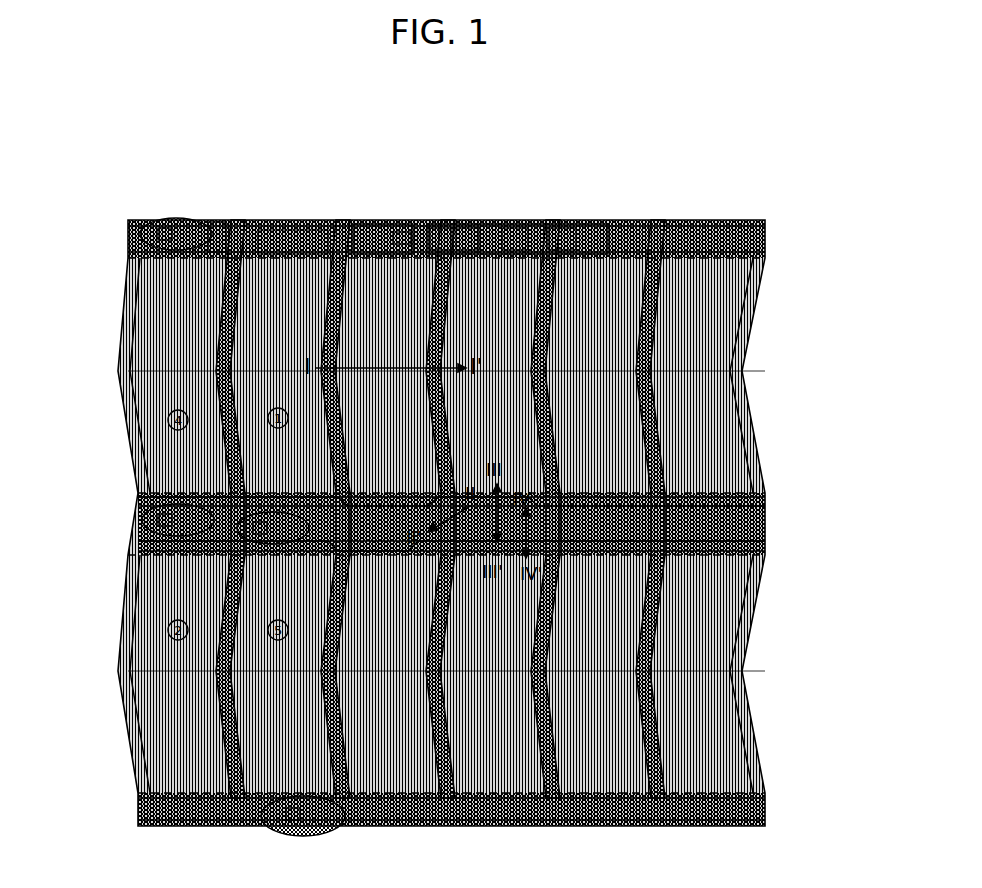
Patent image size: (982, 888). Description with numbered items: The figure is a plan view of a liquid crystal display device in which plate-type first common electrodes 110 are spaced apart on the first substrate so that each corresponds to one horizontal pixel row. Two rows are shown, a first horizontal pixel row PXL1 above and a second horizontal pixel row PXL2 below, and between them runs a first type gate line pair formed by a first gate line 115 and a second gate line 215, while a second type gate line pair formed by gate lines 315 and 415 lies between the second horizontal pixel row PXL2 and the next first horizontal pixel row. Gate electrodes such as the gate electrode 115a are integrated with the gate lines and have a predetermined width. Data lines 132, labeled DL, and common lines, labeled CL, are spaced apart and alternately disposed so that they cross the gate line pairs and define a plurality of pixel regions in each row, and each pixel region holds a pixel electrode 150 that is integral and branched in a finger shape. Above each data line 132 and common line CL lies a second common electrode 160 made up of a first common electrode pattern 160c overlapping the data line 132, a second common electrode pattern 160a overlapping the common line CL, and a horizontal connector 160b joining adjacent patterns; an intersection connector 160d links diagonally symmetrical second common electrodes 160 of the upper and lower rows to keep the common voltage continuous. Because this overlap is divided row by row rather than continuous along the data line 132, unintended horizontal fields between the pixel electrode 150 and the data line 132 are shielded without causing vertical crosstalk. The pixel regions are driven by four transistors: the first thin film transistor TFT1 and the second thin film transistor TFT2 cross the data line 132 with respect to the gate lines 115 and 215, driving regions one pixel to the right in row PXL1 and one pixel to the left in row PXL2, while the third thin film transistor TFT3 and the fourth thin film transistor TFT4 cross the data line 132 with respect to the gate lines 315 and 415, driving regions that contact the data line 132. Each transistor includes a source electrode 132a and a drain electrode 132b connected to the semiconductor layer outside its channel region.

The first common electrode 110 is at (600, 214).
The first gate line 115 is at (130, 500).
The gate electrode 115a is at (125, 470).
The second gate line 215 is at (127, 531).
The gate line 315 is at (128, 810).
The gate line 415 is at (206, 212).
The data line 132 is at (347, 214).
The source electrode 132a is at (300, 216).
The drain electrode 132b is at (388, 218).
The pixel electrode 150 is at (758, 268).
The second common electrode 160 is at (565, 116).
The second common electrode pattern 160a is at (458, 218).
The horizontal connector 160b is at (512, 218).
The first common electrode pattern 160c is at (548, 218).
The intersection connector 160d is at (432, 218).
The data line DL is at (441, 492).
The common line CL is at (212, 212).
The first thin film transistor TFT1 is at (128, 486).
The second thin film transistor TFT2 is at (228, 554).
The third thin film transistor TFT3 is at (296, 830).
The fourth thin film transistor TFT4 is at (178, 212).
The first horizontal pixel row PXL1 is at (488, 375).
The second horizontal pixel row PXL2 is at (488, 674).